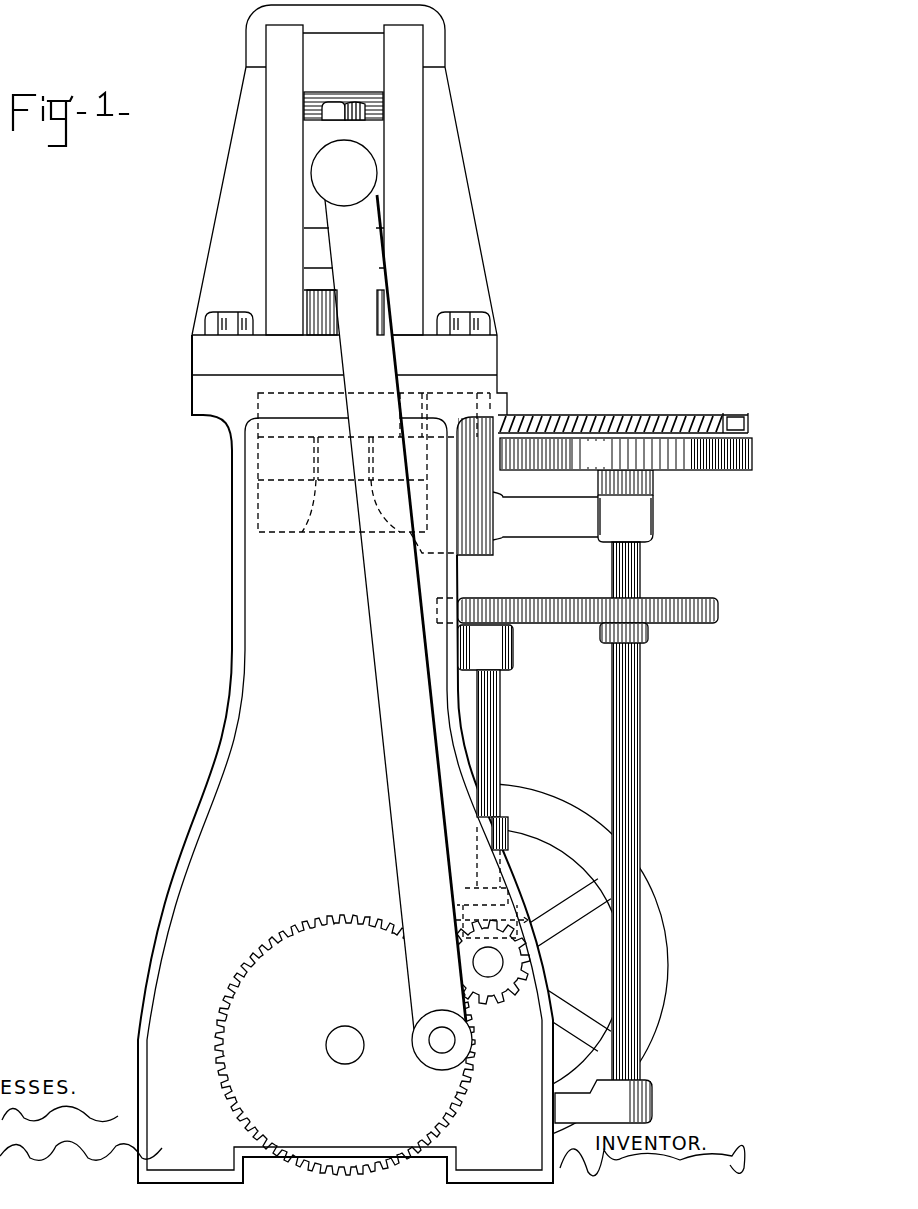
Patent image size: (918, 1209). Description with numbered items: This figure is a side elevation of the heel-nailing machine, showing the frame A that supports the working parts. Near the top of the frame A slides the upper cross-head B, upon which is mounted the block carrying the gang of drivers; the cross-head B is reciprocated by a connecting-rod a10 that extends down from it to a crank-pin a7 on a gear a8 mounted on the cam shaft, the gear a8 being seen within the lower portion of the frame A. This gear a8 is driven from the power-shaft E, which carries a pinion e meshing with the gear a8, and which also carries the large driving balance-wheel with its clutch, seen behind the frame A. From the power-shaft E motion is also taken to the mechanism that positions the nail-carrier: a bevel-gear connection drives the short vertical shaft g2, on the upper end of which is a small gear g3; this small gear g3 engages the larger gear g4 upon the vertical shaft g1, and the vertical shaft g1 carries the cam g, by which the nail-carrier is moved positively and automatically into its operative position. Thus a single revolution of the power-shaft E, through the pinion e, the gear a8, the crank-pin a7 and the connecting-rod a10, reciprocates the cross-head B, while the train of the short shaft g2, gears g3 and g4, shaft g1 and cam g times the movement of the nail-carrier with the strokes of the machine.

The frame A is at (345, 594).
The upper cross-head B is at (332, 103).
The shaft a7 is at (490, 1041).
The gear wheel a8 is at (345, 1045).
The connecting rod a10 is at (395, 612).
The power-shaft E is at (488, 962).
The pinion e is at (497, 992).
The cam g is at (625, 441).
The vertical shaft g1 is at (641, 762).
The short vertical shaft g2 is at (496, 708).
The small gear g3 is at (492, 607).
The larger gear g4 is at (661, 603).